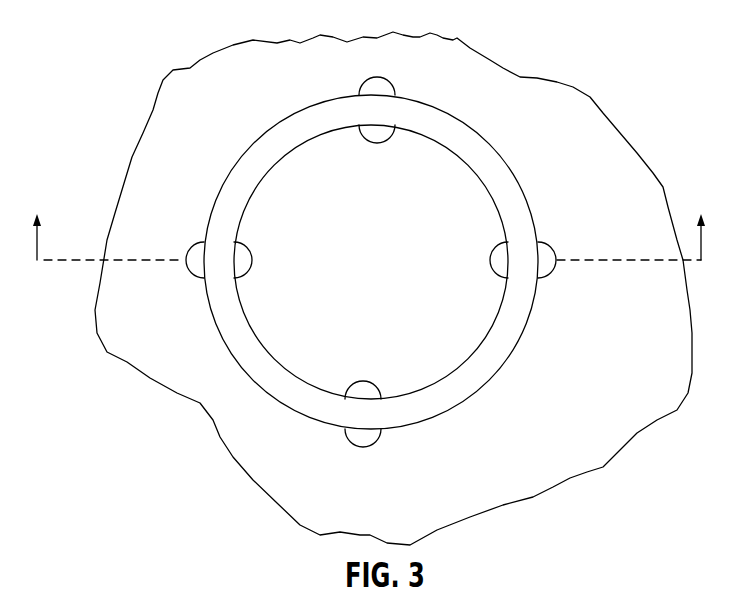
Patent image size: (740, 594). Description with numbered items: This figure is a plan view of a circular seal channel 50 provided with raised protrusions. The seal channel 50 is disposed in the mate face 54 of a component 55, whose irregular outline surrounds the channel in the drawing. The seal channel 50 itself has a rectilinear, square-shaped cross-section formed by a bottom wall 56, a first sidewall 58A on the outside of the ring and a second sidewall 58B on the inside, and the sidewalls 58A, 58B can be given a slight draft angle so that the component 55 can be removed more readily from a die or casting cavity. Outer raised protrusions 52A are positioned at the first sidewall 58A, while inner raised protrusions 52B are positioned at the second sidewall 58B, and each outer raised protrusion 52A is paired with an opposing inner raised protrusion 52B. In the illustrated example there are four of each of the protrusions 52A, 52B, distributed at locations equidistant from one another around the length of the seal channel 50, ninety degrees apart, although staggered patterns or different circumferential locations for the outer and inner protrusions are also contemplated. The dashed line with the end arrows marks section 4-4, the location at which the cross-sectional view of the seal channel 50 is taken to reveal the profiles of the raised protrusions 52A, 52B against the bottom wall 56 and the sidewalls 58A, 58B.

The section 4- 4 is at (369, 221).
The seal channel 50 is at (399, 274).
The outer raised protrusions 52A is at (362, 86).
The inner raised protrusions 52B is at (390, 135).
The mate face 54 is at (393, 288).
The component 55 is at (582, 444).
The bottom wall 56 is at (399, 274).
The first sidewall 58A is at (517, 343).
The second sidewall 58B is at (271, 357).